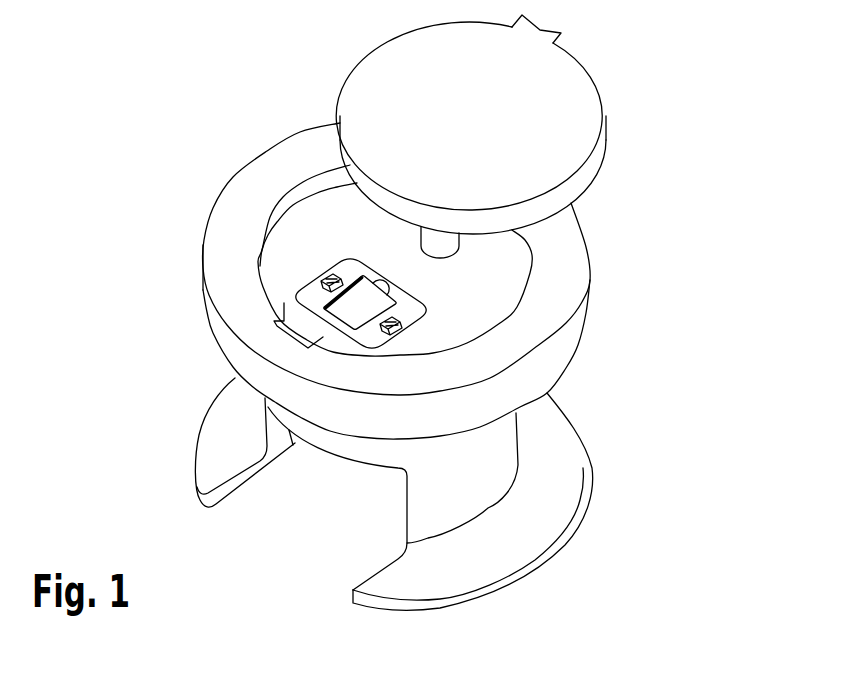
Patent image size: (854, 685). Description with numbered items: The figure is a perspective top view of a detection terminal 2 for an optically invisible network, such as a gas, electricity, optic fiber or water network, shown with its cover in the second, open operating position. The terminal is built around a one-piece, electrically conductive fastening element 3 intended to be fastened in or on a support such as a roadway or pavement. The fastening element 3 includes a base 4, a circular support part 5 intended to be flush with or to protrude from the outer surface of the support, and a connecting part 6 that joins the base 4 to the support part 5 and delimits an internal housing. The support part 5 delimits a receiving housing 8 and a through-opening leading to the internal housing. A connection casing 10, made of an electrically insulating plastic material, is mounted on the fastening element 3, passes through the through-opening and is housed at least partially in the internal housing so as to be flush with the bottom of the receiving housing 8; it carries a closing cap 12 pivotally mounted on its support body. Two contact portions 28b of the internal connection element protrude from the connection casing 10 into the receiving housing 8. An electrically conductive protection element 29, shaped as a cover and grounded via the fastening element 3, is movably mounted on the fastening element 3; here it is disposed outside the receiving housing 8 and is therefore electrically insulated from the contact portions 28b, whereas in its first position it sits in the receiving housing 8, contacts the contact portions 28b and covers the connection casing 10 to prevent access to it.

The detection terminal 2 is at (709, 164).
The fastening element 3 is at (468, 550).
The base 4 is at (537, 507).
The support part 5 is at (573, 258).
The connecting part 6 is at (503, 430).
The receiving housing 8 is at (307, 208).
The connection casing 10 is at (298, 293).
The closing cap 12 is at (352, 312).
The contact portion 28b is at (327, 275).
The protection element 29 is at (570, 113).